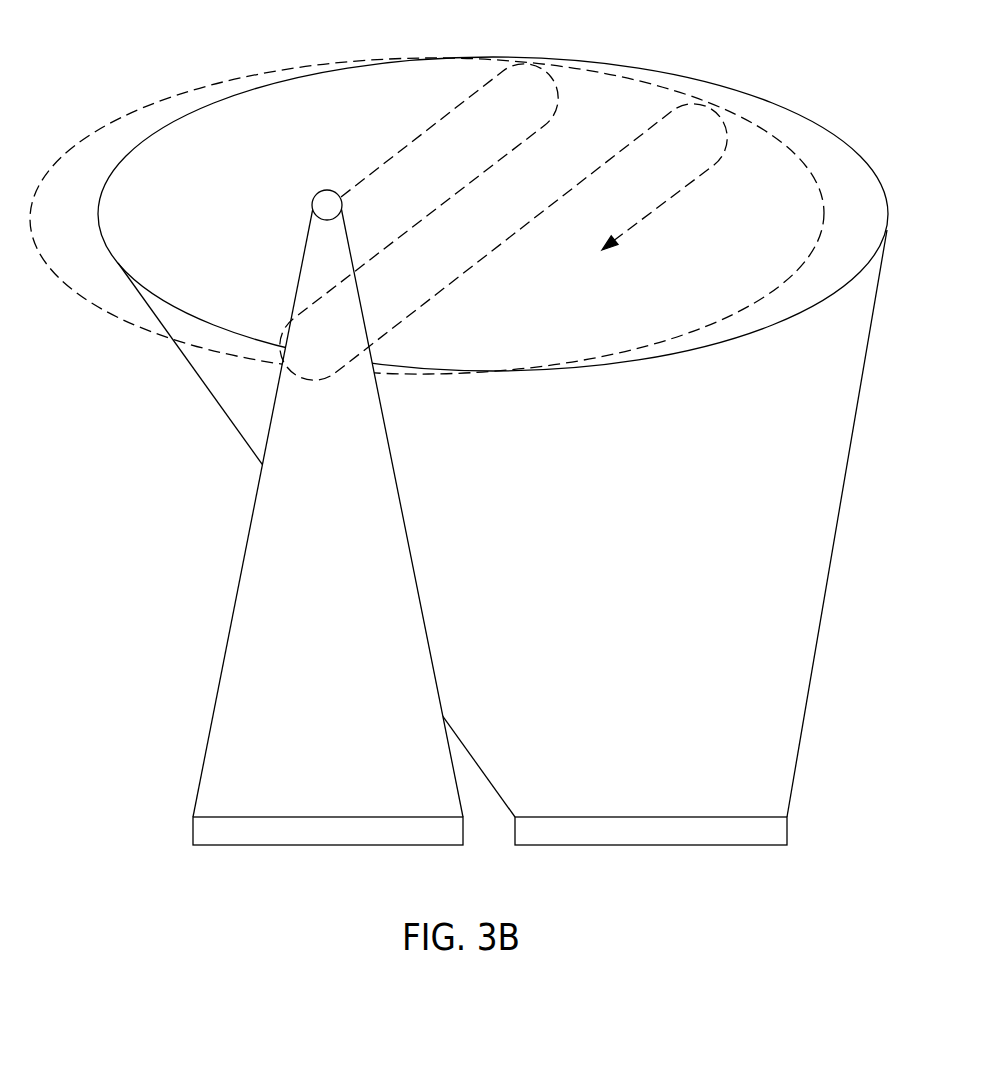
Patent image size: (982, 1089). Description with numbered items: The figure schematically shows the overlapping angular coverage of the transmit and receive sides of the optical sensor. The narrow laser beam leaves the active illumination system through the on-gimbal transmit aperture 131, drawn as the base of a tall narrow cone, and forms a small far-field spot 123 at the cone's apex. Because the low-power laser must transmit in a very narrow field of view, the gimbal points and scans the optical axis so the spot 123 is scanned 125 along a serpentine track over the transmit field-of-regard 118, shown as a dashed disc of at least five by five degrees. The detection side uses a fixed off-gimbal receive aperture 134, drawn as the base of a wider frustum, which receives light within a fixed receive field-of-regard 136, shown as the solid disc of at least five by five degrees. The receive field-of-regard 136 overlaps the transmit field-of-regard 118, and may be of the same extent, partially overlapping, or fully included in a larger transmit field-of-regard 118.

The transmit field-of-regard 118 is at (145, 103).
The spot 123 is at (313, 195).
The scan 125 is at (657, 203).
The on-gimbal transmit aperture 131 is at (192, 832).
The fixed off-gimbal receive aperture 134 is at (790, 829).
The receive field-of-regard 136 is at (812, 118).